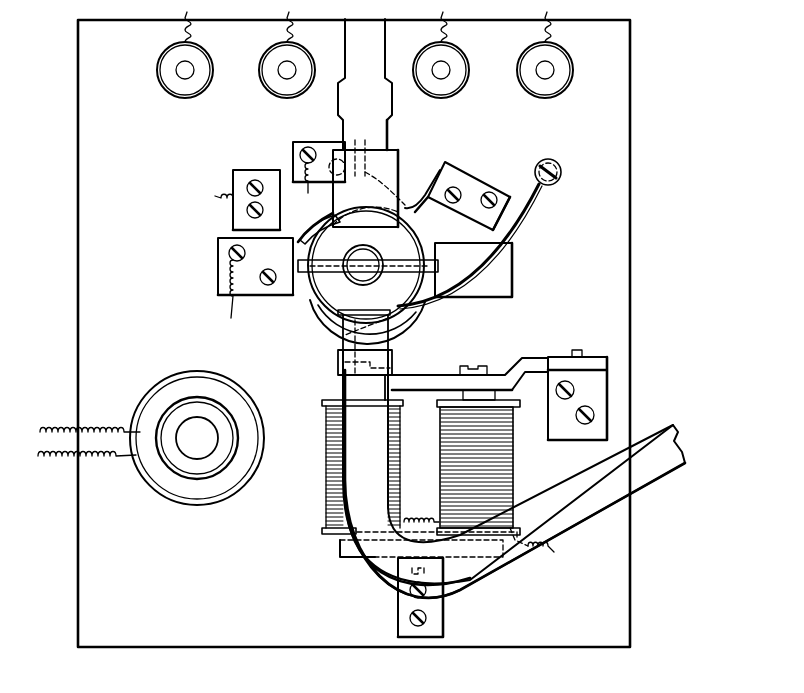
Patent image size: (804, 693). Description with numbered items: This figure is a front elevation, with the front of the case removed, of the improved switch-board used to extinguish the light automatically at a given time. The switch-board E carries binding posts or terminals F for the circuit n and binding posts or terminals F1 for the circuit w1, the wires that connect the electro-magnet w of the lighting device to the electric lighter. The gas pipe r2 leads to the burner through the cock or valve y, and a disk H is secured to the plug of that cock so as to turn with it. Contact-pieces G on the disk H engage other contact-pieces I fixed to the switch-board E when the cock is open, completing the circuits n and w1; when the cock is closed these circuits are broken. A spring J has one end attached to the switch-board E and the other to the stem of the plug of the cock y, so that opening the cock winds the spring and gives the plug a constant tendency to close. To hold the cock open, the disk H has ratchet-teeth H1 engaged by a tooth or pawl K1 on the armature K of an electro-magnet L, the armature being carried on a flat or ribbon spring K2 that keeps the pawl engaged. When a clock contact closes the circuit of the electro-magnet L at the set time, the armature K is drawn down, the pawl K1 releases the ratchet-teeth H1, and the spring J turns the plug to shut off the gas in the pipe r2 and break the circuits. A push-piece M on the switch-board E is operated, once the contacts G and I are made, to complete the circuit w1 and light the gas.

The switch-board E is at (354, 333).
The binding posts or terminals F is at (236, 79).
The binding posts or terminals F1 is at (493, 79).
The circuit n is at (244, 21).
The electro-magnet w is at (90, 421).
The wires or conductors / circuit w1 is at (303, 237).
The push-piece M is at (197, 438).
The pipe r2 is at (511, 308).
The disk H is at (410, 225).
The ratchet-teeth H1 is at (377, 318).
The cock or valve y is at (365, 260).
The spring J is at (522, 232).
The contact-pieces I is at (406, 207).
The contact-pieces G is at (280, 230).
The armature K is at (426, 380).
The tooth or pawl K1 is at (390, 346).
The flat or ribbon spring K2 is at (532, 357).
The electro-magnet L is at (398, 472).